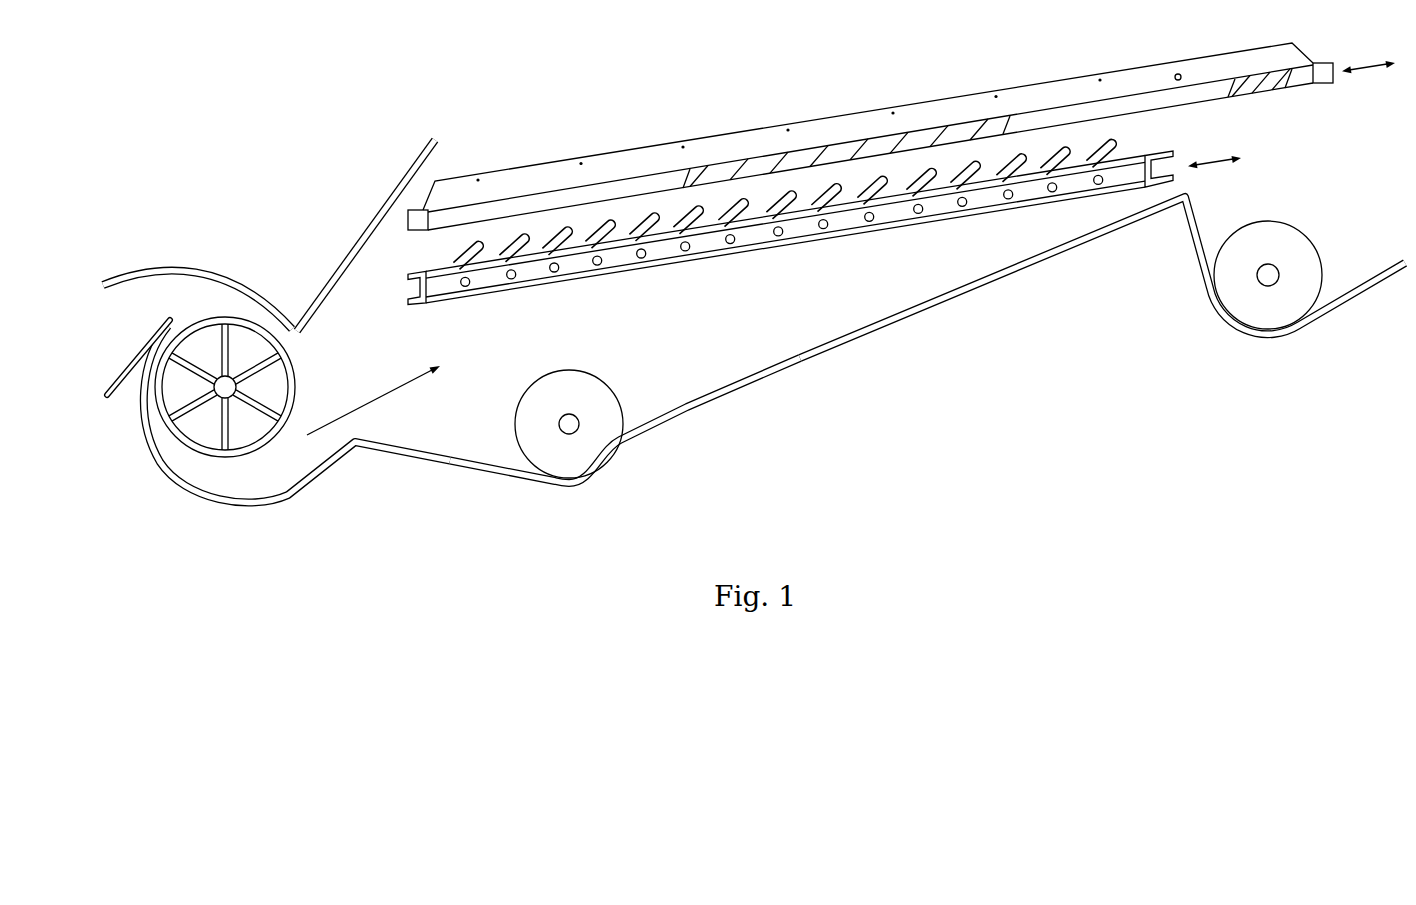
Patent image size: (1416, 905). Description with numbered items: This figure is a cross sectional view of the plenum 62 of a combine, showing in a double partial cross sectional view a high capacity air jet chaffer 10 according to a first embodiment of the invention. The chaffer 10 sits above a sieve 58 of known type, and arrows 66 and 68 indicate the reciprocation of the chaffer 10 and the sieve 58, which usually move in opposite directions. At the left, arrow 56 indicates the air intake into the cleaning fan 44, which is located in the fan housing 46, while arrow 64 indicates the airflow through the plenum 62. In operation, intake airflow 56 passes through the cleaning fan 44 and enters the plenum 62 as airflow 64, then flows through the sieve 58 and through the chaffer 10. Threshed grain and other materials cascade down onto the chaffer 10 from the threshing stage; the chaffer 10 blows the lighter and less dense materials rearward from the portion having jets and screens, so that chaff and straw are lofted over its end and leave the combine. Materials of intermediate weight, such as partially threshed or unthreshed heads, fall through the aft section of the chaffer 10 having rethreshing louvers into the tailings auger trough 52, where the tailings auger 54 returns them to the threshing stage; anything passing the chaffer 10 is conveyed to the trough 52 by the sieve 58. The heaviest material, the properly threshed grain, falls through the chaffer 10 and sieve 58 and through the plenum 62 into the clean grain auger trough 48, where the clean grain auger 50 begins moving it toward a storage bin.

The high capacity air jet chaffer 10 is at (713, 94).
The cleaning fan 44 is at (216, 320).
The fan housing 46 is at (197, 266).
The clean grain auger trough 48 is at (580, 488).
The clean grain auger 50 is at (595, 373).
The tailings auger trough 52 is at (1261, 341).
The tailings auger 54 is at (1293, 224).
The arrow indicating air intake 56 is at (158, 308).
The sieve 58 is at (835, 250).
The plenum 62 is at (487, 372).
The arrow indicating airflow through plenum 64 is at (392, 394).
The arrow indicating reciprocation of chaffer 66 is at (1370, 62).
The arrow indicating reciprocation of sieve 68 is at (1207, 163).